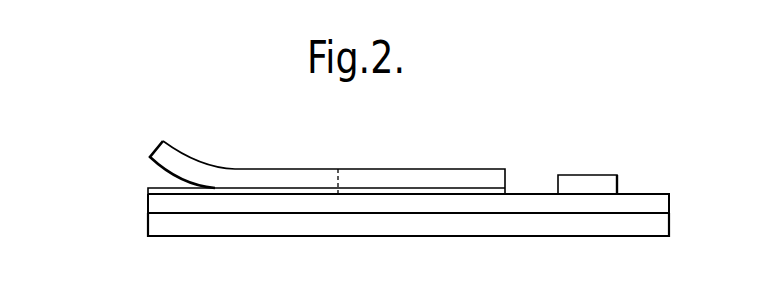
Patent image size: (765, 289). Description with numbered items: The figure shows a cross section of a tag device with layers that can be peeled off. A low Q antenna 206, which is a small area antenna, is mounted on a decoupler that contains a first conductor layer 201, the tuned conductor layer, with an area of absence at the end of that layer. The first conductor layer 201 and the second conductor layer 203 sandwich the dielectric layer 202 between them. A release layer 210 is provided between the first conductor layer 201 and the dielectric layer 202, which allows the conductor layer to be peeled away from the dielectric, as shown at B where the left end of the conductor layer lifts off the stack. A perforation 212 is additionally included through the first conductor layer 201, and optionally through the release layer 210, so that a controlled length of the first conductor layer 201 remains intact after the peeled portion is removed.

The first conductor layer 201 is at (503, 180).
The dielectric layer 202 is at (158, 207).
The second conductor layer 203 is at (158, 224).
The low Q antenna 206 is at (592, 182).
The release layer 210 is at (158, 190).
The perforation 212 is at (337, 178).
The peeled-away region B is at (178, 127).